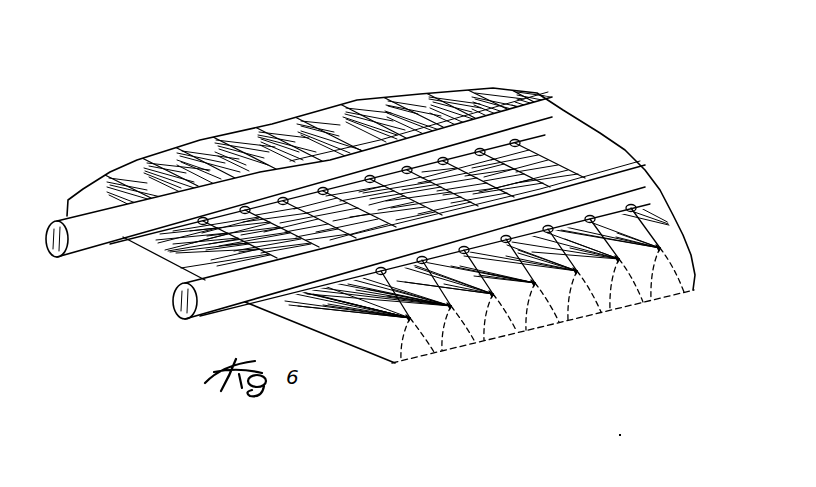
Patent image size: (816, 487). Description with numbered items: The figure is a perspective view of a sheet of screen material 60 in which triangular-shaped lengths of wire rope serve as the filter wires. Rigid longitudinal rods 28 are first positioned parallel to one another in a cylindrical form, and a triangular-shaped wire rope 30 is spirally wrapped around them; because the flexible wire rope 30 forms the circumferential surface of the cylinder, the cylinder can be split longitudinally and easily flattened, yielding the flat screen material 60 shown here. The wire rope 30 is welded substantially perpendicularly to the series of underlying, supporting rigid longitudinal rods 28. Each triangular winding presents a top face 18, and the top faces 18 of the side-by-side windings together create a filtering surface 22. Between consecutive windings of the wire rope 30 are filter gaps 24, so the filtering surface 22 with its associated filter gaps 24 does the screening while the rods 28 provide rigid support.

The screen material 60 is at (194, 87).
The rigid longitudinal rods 28 is at (84, 230).
The triangular-shaped wire rope 30 is at (391, 338).
The top face 18 is at (459, 355).
The filtering surface 22 is at (506, 379).
The filter gaps 24 is at (557, 327).